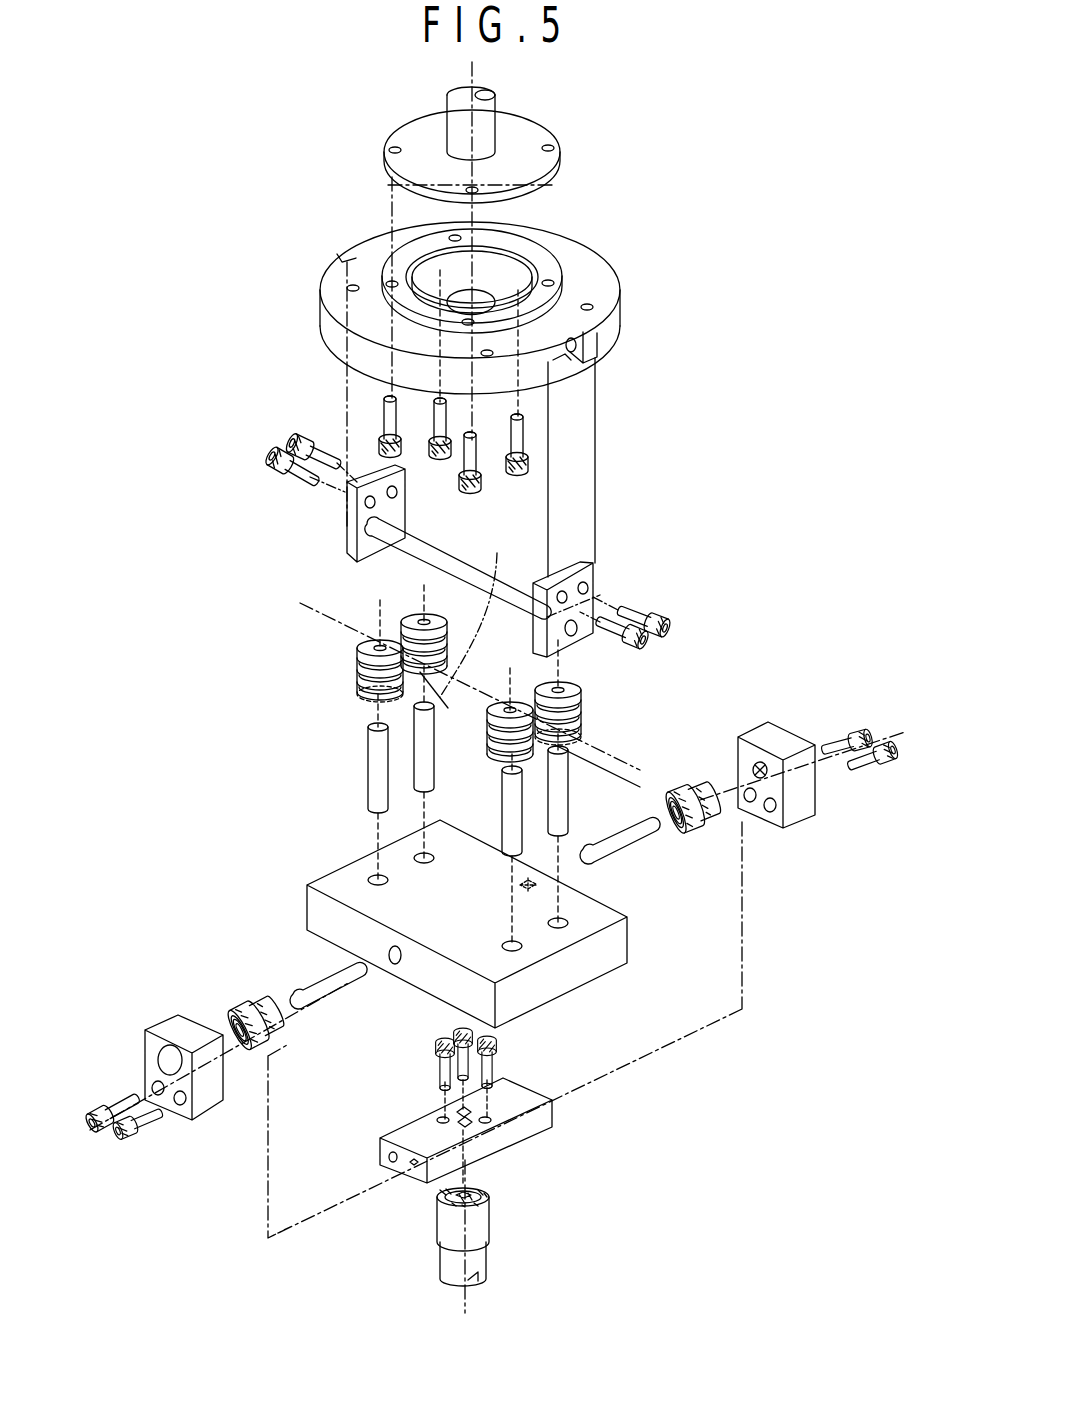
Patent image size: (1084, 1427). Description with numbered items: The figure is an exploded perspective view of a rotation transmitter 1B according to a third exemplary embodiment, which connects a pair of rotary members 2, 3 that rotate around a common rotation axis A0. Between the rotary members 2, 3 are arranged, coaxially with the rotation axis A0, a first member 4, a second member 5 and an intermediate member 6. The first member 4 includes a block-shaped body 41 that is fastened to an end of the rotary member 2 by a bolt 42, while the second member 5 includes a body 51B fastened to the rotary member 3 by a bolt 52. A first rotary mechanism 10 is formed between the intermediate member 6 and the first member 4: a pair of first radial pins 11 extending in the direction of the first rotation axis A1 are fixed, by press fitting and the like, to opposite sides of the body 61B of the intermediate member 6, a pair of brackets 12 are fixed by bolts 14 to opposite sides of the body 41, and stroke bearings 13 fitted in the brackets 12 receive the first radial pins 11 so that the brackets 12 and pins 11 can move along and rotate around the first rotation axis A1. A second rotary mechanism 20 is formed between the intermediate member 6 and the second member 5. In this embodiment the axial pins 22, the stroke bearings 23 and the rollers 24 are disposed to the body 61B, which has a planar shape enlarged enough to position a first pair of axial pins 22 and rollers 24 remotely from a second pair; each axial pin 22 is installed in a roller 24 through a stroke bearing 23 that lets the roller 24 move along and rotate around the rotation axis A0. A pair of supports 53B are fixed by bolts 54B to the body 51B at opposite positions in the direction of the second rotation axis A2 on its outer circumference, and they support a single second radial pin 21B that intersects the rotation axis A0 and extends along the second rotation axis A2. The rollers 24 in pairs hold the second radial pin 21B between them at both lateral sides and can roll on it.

The rotation transmitter 1B is at (464, 437).
The rotary member 2 is at (497, 1255).
The rotary member 3 is at (420, 103).
The first member 4 is at (486, 1126).
The second member 5 is at (464, 437).
The intermediate member 6 is at (476, 1029).
The first rotary mechanism 10 is at (502, 943).
The first radial pin 11 is at (625, 852).
The bracket 12 is at (793, 822).
The stroke bearing 13 is at (690, 783).
The bolt 14 is at (880, 762).
The second rotary mechanism 20 is at (464, 756).
The second radial pin 21B is at (463, 567).
The axial pin 22 is at (420, 770).
The stroke bearing 23 is at (424, 618).
The roller 24 is at (615, 742).
The block-shaped body 41 is at (527, 1140).
The bolt 42 is at (495, 1072).
The body 51B is at (320, 326).
The bolt 52 is at (455, 443).
The support 53B is at (345, 526).
The bolt 54B is at (265, 455).
The body 61B is at (303, 919).
The rotation axis A0 is at (480, 80).
The first rotation axis A1 is at (835, 728).
The second rotation axis A2 is at (300, 602).